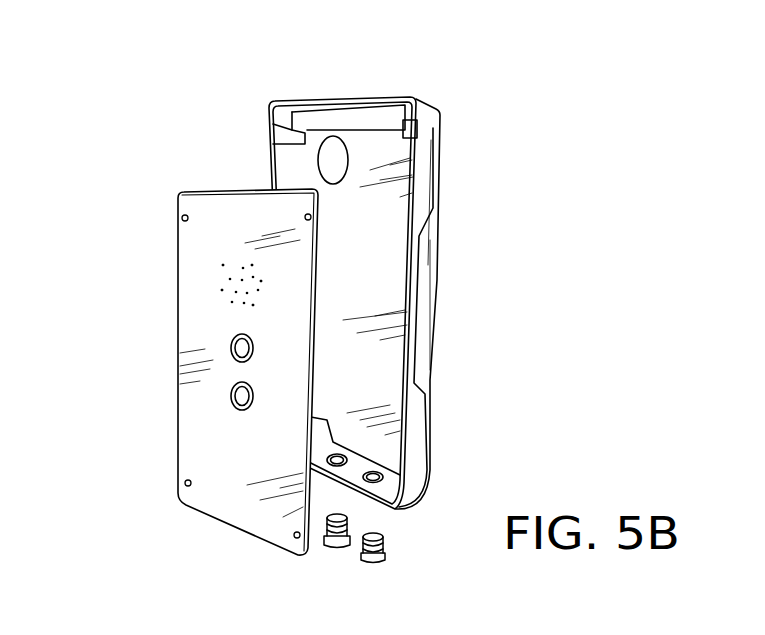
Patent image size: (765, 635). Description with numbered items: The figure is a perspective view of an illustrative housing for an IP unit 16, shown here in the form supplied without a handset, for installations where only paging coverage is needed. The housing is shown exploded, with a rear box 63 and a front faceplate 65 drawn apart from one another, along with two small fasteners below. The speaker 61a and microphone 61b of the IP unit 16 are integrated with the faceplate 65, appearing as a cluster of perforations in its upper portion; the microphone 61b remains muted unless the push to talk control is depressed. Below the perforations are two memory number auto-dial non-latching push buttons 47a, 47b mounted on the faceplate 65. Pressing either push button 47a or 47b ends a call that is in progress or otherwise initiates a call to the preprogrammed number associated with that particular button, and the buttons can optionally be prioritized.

The IP unit 16 is at (486, 137).
The housing box 63 is at (338, 98).
The front panel 65 is at (218, 216).
The speaker 61a is at (220, 281).
The microphone 61b is at (242, 285).
The memory number auto-dial push button 47a is at (231, 346).
The memory number auto-dial push button 47b is at (233, 396).